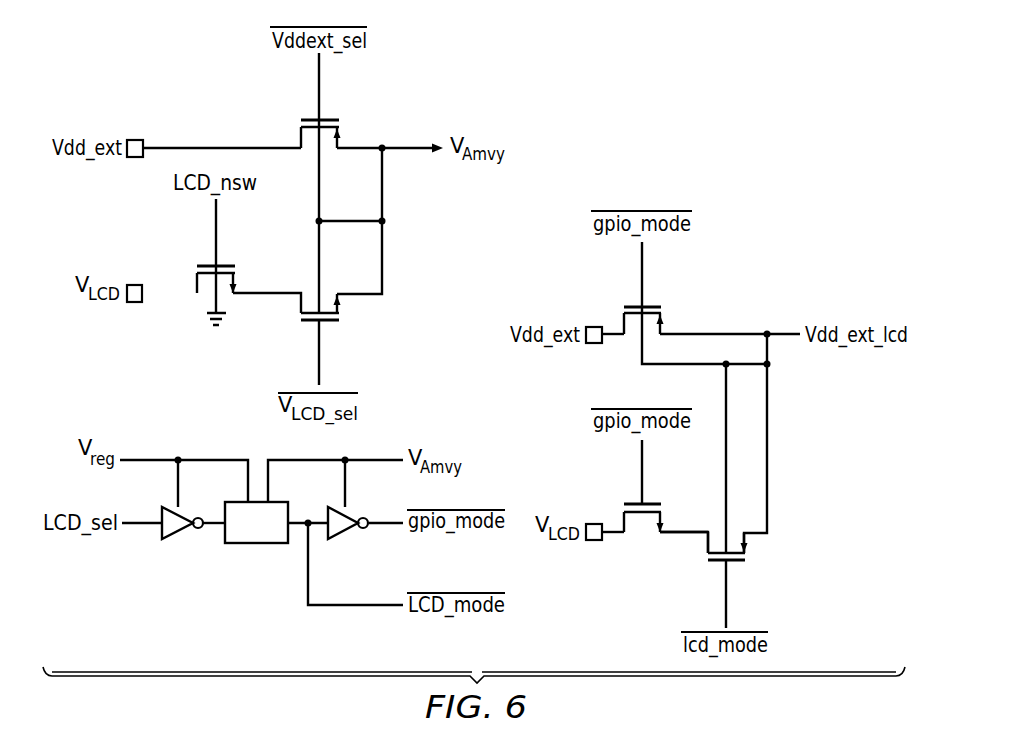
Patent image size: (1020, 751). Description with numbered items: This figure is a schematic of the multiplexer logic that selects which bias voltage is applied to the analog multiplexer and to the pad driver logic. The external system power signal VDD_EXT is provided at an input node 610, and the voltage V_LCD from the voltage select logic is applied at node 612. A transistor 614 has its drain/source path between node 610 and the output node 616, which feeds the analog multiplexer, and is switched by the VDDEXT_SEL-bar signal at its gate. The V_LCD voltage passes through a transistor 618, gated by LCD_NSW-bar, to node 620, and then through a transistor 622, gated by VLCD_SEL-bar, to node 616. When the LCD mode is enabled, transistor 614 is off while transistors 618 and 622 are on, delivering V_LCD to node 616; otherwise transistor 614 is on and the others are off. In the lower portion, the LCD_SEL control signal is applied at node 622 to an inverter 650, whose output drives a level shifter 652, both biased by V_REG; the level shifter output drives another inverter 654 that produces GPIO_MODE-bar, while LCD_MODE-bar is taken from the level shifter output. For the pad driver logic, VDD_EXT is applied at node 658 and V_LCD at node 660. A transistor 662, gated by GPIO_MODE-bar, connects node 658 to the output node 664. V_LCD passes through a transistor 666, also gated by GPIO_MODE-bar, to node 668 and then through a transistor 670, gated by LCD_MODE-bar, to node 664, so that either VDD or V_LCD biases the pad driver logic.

The input node 610 is at (135, 140).
The node 612 is at (133, 302).
The transistor 614 is at (325, 117).
The output node 616 is at (386, 152).
The transistor 618 is at (206, 262).
The node 620 is at (268, 291).
The transistor 622 is at (332, 326).
The inverter 650 is at (180, 535).
The level shifter 652 is at (258, 545).
The inverter 654 is at (350, 538).
The node 658 is at (592, 327).
The node 660 is at (594, 541).
The transistor 662 is at (652, 303).
The output node 664 is at (762, 332).
The transistor 666 is at (652, 503).
The node 668 is at (683, 535).
The transistor 670 is at (738, 563).